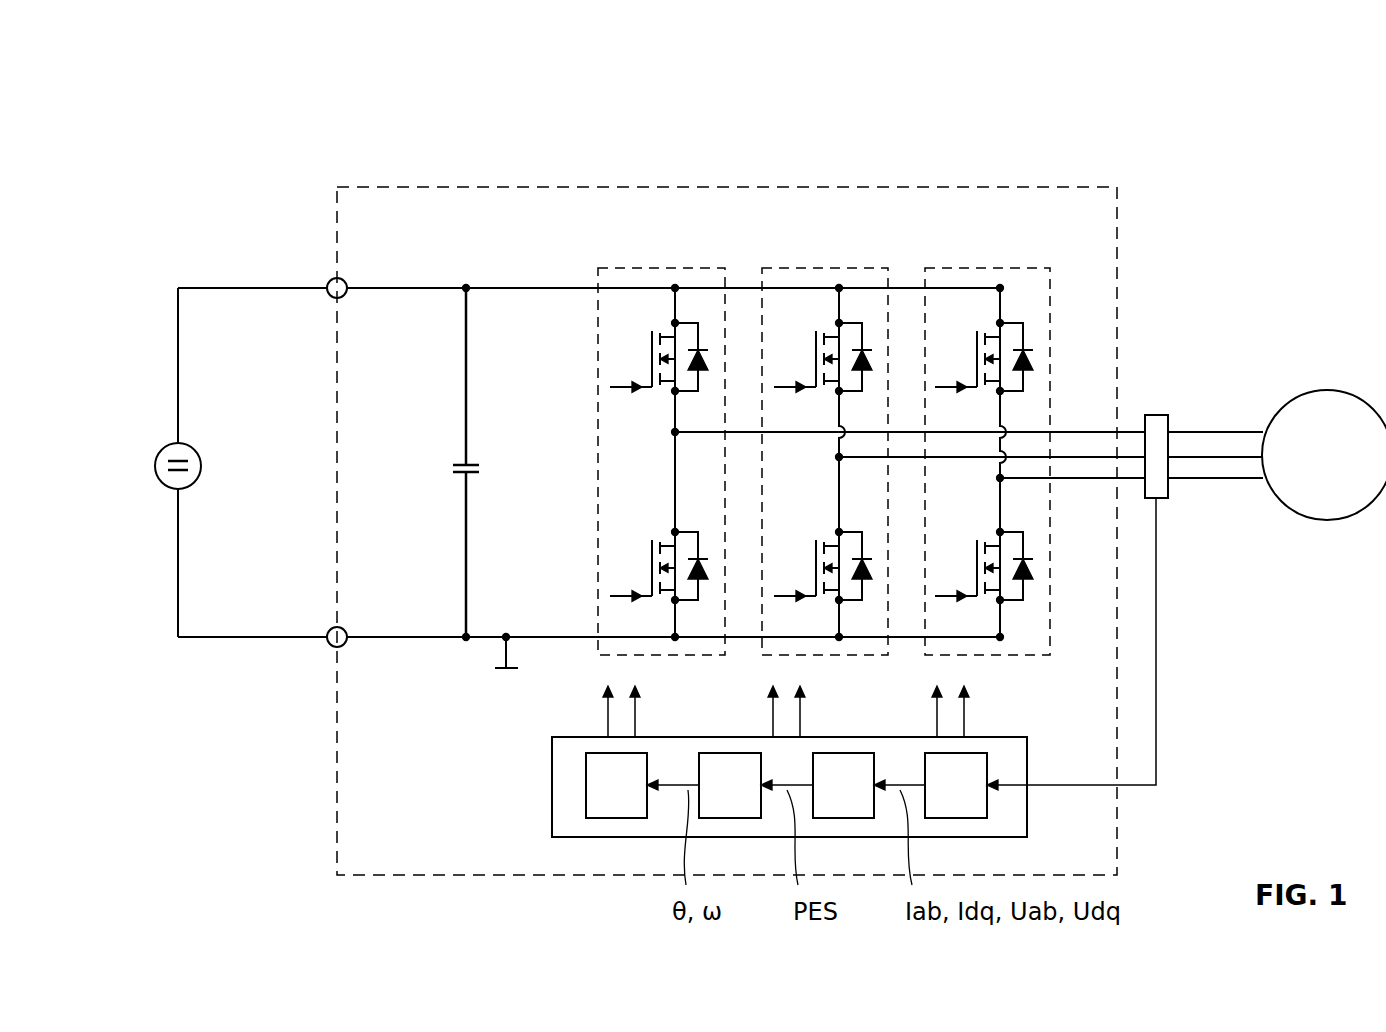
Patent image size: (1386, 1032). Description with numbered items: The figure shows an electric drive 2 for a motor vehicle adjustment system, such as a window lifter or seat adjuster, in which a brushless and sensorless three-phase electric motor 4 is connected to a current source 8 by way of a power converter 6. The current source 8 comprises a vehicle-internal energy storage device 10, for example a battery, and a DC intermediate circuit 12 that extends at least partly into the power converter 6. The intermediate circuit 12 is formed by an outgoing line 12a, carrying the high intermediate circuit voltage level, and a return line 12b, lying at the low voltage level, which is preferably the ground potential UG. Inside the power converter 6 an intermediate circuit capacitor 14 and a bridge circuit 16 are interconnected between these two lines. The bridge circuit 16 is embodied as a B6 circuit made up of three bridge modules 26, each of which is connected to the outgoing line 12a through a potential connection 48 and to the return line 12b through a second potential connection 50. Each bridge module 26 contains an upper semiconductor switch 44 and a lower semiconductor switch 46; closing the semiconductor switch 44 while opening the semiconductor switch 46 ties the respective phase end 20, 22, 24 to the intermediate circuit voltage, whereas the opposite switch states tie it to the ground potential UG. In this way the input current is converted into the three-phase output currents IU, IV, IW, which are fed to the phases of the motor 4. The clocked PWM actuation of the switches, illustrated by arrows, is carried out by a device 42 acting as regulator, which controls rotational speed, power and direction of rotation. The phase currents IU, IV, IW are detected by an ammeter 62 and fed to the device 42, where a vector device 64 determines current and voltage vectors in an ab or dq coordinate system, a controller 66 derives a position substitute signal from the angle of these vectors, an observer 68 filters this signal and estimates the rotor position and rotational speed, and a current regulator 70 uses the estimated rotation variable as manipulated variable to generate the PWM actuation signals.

The electric drive 2 is at (1202, 102).
The electric motor 4 is at (1334, 466).
The power converter 6 is at (437, 185).
The current source 8 is at (130, 319).
The energy storage device 10 is at (160, 452).
The intermediate circuit 12 is at (266, 532).
The outgoing line 12a is at (335, 296).
The return line 12b is at (330, 628).
The intermediate circuit capacitor 14 is at (462, 475).
The bridge circuit 16 is at (748, 236).
The phase end 20 is at (672, 432).
The phase end 22 is at (836, 457).
The phase end 24 is at (997, 478).
The bridge module 26 is at (618, 268).
The device 42 is at (550, 793).
The semiconductor switch 44 is at (650, 360).
The semiconductor switch 46 is at (650, 568).
The potential connection 48 is at (675, 286).
The second potential connection 50 is at (677, 640).
The ammeter 62 is at (1156, 413).
The vector device 64 is at (970, 798).
The controller 66 is at (858, 798).
The observer 68 is at (744, 798).
The current regulator 70 is at (631, 798).
The ground potential UG is at (500, 670).
The phase current IU is at (1210, 430).
The phase current IV is at (1212, 460).
The phase current IW is at (1252, 481).